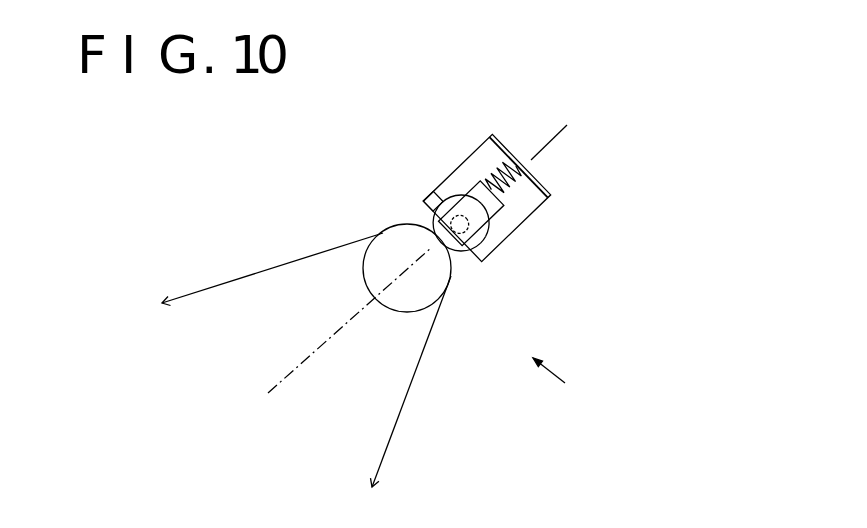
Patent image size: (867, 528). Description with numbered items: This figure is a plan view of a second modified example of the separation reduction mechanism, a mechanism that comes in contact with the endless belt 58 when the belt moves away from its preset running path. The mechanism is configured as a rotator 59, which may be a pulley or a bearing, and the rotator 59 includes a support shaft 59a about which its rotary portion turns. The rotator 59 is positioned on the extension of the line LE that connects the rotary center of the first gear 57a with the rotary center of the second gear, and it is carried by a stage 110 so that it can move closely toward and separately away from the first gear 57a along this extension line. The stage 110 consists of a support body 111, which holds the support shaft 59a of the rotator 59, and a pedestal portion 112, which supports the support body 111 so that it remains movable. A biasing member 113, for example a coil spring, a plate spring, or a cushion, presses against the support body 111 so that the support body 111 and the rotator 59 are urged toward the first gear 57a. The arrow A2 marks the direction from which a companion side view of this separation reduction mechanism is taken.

The stage 110 is at (565, 206).
The support body 111 is at (502, 237).
The pedestal portion 112 is at (532, 213).
The biasing member 113 is at (486, 176).
The rotator 59 is at (428, 196).
The support shaft 59a is at (483, 261).
The first gear 57a is at (362, 268).
The endless belt 58 is at (212, 283).
The line connecting rotary centers LE is at (550, 138).
The arrow A2 is at (568, 382).